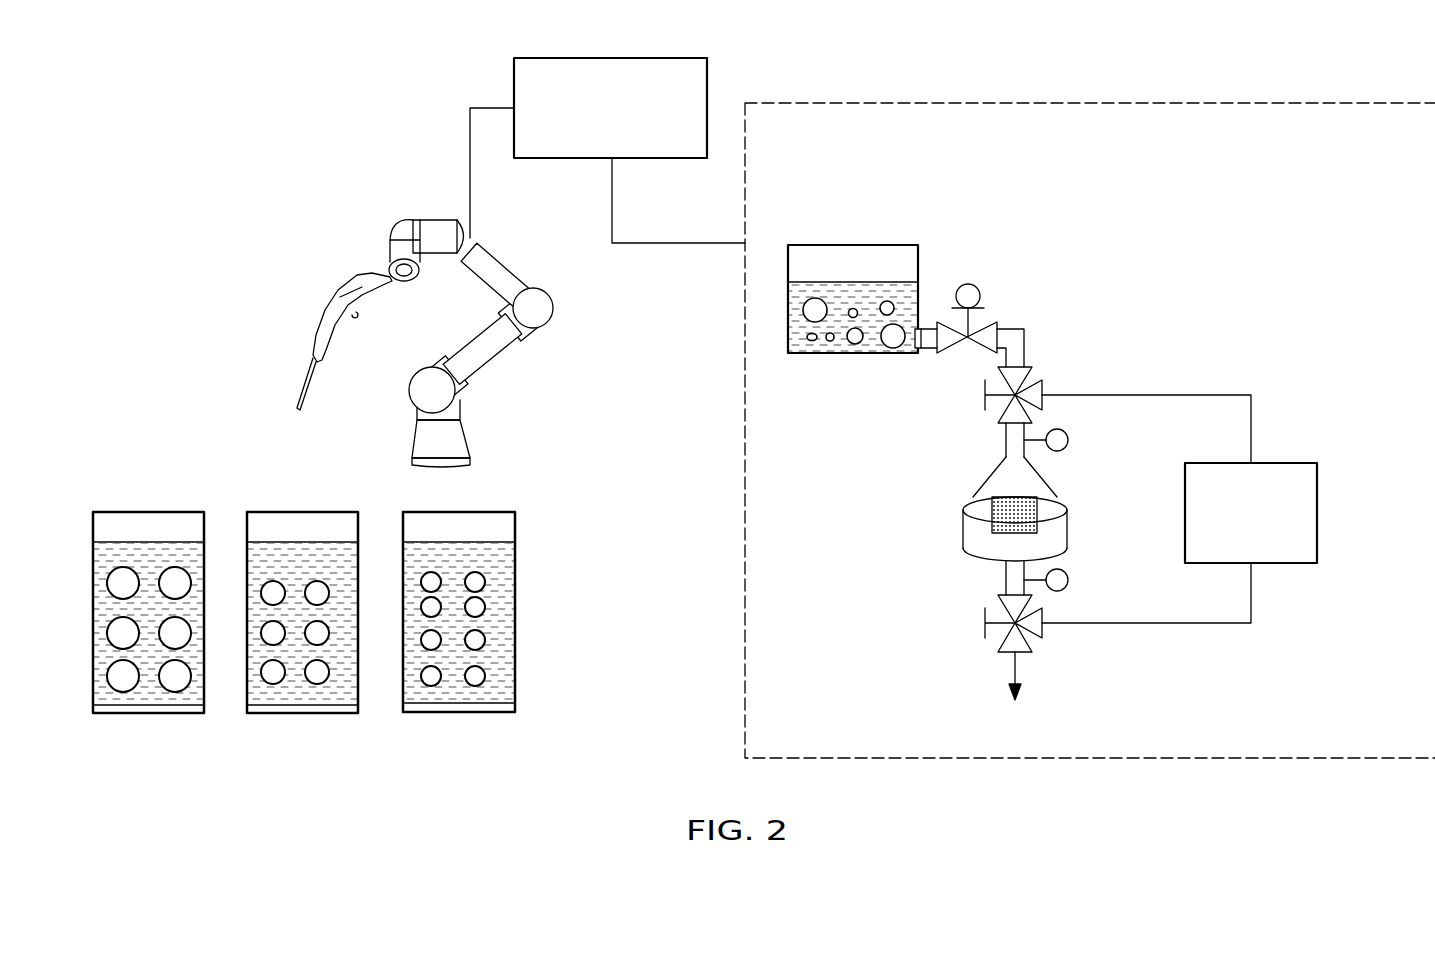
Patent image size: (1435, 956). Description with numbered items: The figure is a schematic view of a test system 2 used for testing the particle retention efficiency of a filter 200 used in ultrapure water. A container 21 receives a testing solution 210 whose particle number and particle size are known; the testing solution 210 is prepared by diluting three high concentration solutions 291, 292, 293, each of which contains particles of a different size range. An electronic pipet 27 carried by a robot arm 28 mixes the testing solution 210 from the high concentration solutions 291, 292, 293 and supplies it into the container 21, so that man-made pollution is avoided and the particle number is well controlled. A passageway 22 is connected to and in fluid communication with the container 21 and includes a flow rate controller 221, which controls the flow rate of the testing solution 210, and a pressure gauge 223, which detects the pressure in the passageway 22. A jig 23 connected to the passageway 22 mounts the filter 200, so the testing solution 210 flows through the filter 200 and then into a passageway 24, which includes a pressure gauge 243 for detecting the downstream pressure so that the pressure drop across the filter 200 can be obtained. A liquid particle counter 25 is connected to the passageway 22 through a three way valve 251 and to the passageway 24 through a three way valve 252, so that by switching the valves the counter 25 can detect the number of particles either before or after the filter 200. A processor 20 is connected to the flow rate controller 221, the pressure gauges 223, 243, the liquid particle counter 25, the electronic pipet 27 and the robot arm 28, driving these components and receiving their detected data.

The test system 2 is at (257, 184).
The processor 20 is at (587, 108).
The container 21 is at (842, 302).
The testing solution 210 is at (812, 345).
The passageway 22 is at (1024, 337).
The flow rate controller 221 is at (969, 284).
The valve 251 is at (1032, 390).
The pressure gauge 223 is at (1068, 443).
The jig 23 is at (1026, 518).
The filter 200 is at (1020, 520).
The passageway 24 is at (1000, 582).
The pressure gauge 243 is at (1060, 578).
The valve 252 is at (1040, 635).
The liquid particle counter 25 is at (1232, 525).
The electronic pipet 27 is at (318, 340).
The robot arm 28 is at (541, 313).
The high concentration solution 291 is at (163, 553).
The high concentration solution 292 is at (321, 558).
The high concentration solution 293 is at (490, 562).